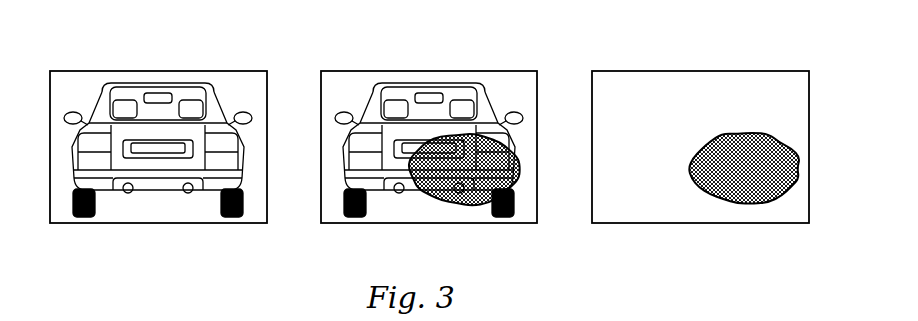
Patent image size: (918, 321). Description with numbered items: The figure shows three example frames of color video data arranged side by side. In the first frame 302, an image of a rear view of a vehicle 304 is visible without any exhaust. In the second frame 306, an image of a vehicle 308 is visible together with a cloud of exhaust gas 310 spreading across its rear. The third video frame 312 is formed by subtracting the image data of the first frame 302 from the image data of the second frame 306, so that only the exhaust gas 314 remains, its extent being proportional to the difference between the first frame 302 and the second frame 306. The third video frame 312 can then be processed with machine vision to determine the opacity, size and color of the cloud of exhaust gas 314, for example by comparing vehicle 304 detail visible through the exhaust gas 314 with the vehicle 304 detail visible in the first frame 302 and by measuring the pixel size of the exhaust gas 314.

The first frame 302 is at (110, 71).
The vehicle 304 is at (152, 84).
The second frame 306 is at (362, 71).
The vehicle 308 is at (437, 84).
The cloud of exhaust gas 310 is at (473, 206).
The third video frame 312 is at (640, 71).
The exhaust gas 314 is at (747, 205).